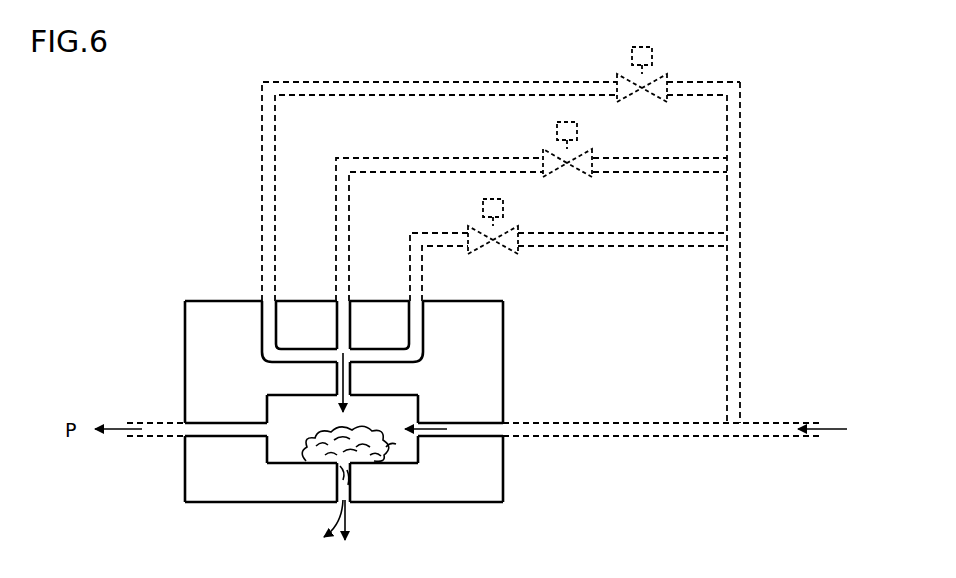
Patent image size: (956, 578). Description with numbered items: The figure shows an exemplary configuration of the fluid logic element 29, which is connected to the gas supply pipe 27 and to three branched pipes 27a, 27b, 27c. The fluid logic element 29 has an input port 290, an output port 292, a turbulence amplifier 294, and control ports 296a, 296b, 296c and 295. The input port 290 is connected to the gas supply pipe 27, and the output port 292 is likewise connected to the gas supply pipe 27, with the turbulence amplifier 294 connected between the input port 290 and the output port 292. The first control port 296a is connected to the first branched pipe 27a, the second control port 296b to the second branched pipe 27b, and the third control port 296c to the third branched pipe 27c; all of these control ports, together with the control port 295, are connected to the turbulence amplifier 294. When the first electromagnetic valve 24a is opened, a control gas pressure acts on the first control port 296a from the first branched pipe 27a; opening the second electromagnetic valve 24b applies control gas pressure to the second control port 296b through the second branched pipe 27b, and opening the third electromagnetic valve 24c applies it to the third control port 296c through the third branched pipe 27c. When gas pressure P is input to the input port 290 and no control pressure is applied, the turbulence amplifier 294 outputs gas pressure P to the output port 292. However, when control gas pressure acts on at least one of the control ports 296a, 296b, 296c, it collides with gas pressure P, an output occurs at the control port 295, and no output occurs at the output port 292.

The fluid logic element 29 is at (443, 502).
The input port 290 is at (475, 422).
The output port 292 is at (223, 422).
The turbulence amplifier 294 is at (283, 465).
The control port 295 is at (352, 487).
The first control port 296a is at (406, 327).
The second control port 296b is at (333, 327).
The third control port 296c is at (258, 327).
The gas supply pipe 27 is at (683, 438).
The first branched pipe 27a is at (683, 248).
The second branched pipe 27b is at (683, 174).
The third branched pipe 27c is at (690, 97).
The first electromagnetic valve 24a is at (506, 208).
The second electromagnetic valve 24b is at (580, 131).
The third electromagnetic valve 24c is at (655, 56).